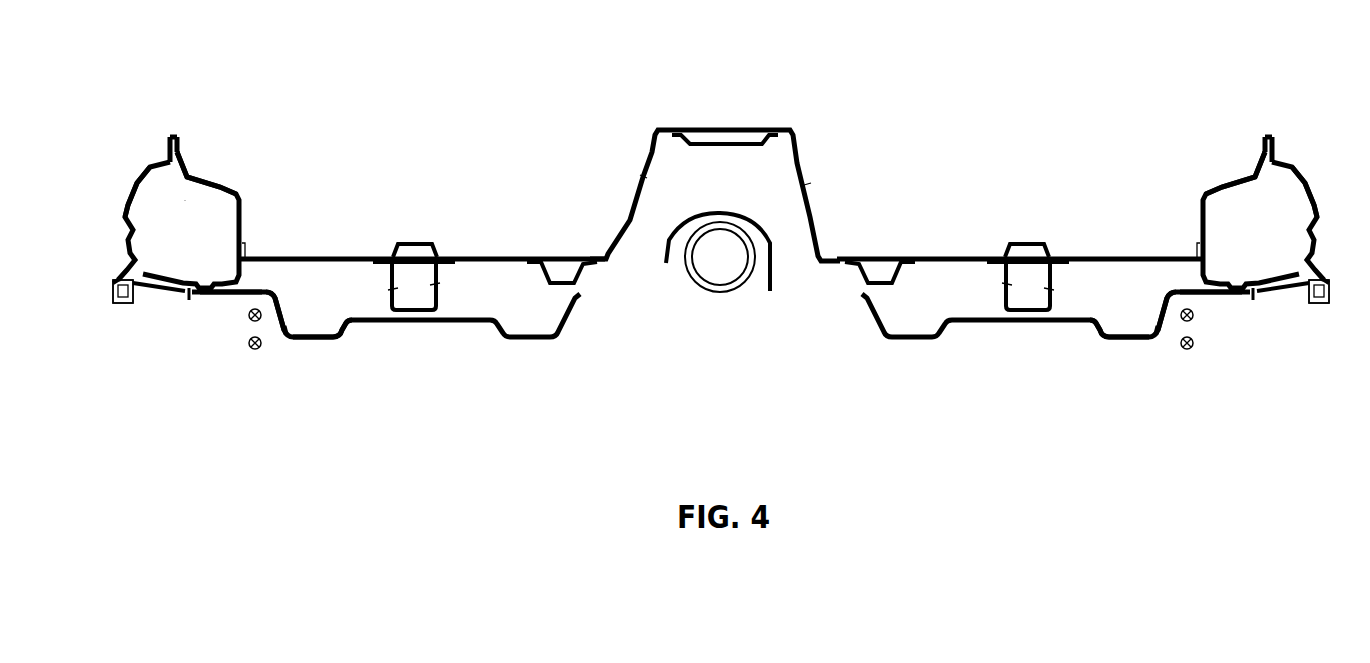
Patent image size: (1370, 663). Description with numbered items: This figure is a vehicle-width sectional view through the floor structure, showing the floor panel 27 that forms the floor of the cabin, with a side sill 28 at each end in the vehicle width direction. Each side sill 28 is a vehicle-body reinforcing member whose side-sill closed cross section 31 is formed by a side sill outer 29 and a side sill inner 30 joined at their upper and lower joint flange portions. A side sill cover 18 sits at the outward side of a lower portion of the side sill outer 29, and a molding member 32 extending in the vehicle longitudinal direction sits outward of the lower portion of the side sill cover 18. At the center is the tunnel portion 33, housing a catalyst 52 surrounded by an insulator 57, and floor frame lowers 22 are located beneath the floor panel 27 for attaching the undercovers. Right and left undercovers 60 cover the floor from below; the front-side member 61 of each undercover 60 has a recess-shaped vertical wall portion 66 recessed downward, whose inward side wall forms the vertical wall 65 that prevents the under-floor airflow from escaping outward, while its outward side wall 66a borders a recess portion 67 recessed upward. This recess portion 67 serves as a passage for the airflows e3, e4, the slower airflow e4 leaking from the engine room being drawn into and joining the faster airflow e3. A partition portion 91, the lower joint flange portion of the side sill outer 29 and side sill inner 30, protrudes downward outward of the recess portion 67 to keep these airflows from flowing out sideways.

The side sill cover 18 is at (118, 270).
The floor frame lower 22 is at (1006, 282).
The floor panel 27 is at (310, 257).
The side sill 28 is at (147, 162).
The side sill outer 29 is at (135, 193).
The side sill inner 30 is at (203, 179).
The side-sill closed cross section 31 is at (198, 236).
The molding member 32 is at (117, 303).
The tunnel portion 33 is at (797, 188).
The catalyst 52 is at (703, 291).
The insulator 57 is at (691, 224).
The undercover 60 is at (496, 316).
The front-side member 61 is at (288, 319).
The vertical wall 65 is at (346, 331).
The vertical wall portion 66 is at (293, 344).
The side wall 66a is at (280, 334).
The recess portion 67 is at (240, 303).
The partition portion 91 is at (187, 300).
The airflow e3 is at (250, 350).
The airflow e4 is at (250, 320).